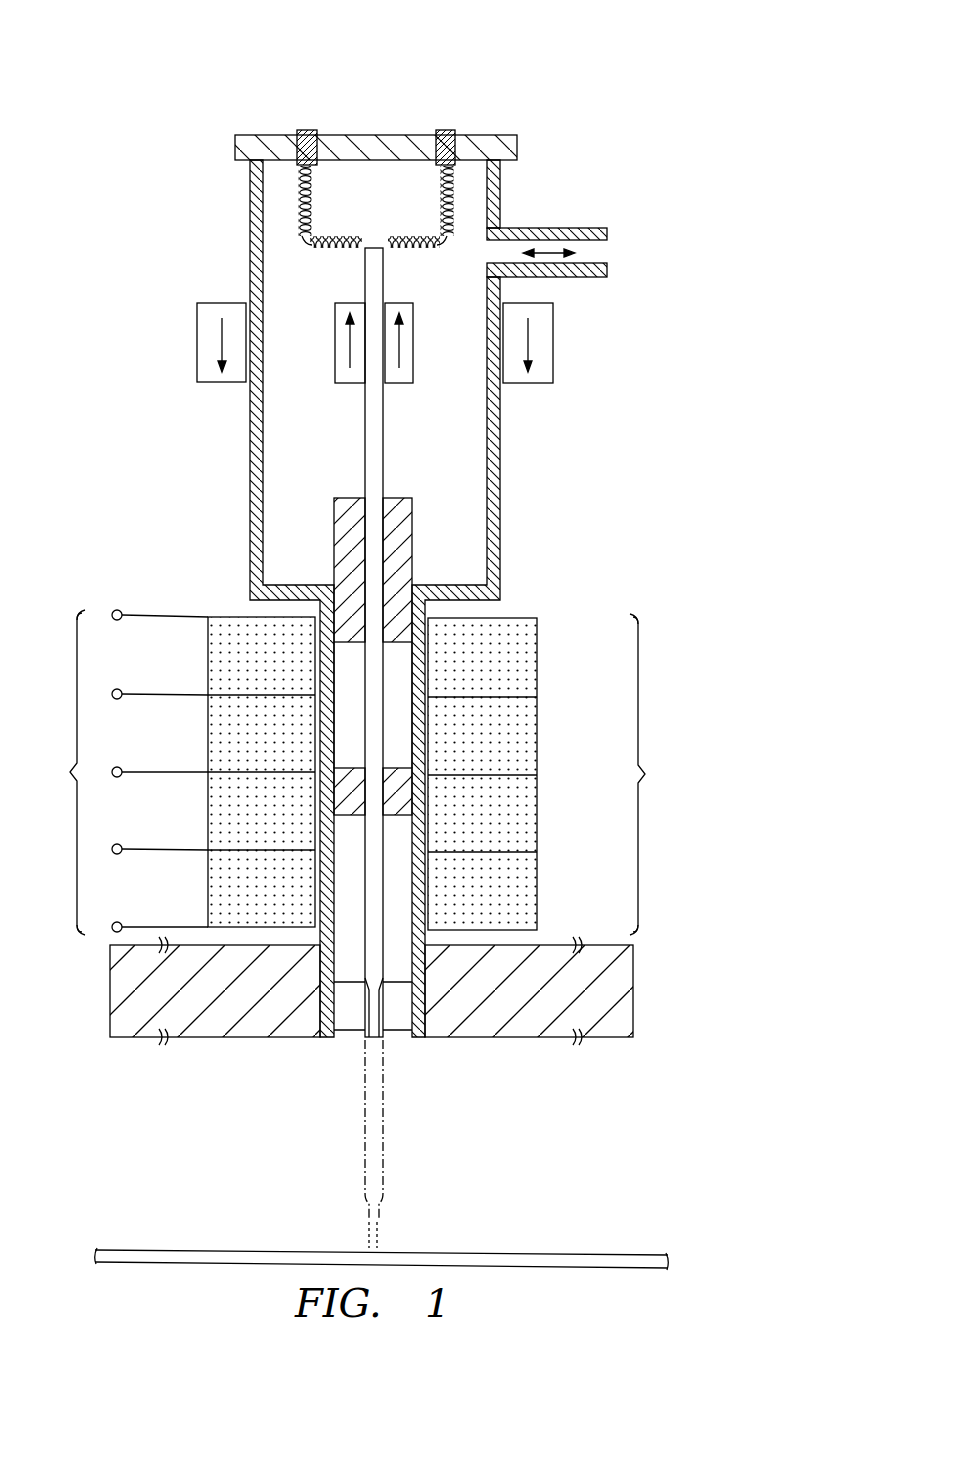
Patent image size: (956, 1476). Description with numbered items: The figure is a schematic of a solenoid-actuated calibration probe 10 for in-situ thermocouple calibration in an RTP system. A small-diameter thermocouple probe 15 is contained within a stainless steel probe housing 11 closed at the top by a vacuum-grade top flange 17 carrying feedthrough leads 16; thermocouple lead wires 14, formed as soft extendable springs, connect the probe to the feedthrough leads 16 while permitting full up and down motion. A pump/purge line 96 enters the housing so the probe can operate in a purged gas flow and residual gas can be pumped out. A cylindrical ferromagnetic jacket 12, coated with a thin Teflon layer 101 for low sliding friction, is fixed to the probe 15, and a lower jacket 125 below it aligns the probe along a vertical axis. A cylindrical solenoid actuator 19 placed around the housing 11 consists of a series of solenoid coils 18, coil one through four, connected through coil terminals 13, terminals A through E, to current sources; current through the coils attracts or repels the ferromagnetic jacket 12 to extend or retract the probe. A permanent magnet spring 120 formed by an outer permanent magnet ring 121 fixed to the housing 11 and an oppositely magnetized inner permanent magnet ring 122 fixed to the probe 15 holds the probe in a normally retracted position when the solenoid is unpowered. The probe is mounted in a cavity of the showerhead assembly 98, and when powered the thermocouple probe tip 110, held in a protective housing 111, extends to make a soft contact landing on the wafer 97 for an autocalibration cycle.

The calibration probe 10 is at (140, 60).
The probe housing 11 is at (502, 537).
The ferromagnetic jacket 12 is at (402, 490).
The coil terminals 13 is at (123, 771).
The thermocouple lead wires 14 is at (307, 248).
The thermocouple probe 15 is at (356, 457).
The feedthrough leads 16 is at (306, 130).
The top flange 17 is at (560, 148).
The solenoid coils 18 is at (443, 774).
The solenoid actuator 19 is at (480, 774).
The pump/purge line 96 is at (646, 254).
The wafer 97 is at (553, 1250).
The showerhead assembly 98 is at (220, 1004).
The thin layer of Teflon 101 is at (334, 558).
The thermocouple probe tip 110 is at (375, 1045).
The protective housing 111 is at (355, 1040).
The permanent magnet spring 120 is at (310, 340).
The outer permanent magnet ring 121 is at (197, 340).
The inner permanent magnet ring 122 is at (413, 335).
The lower jacket 125 is at (340, 797).